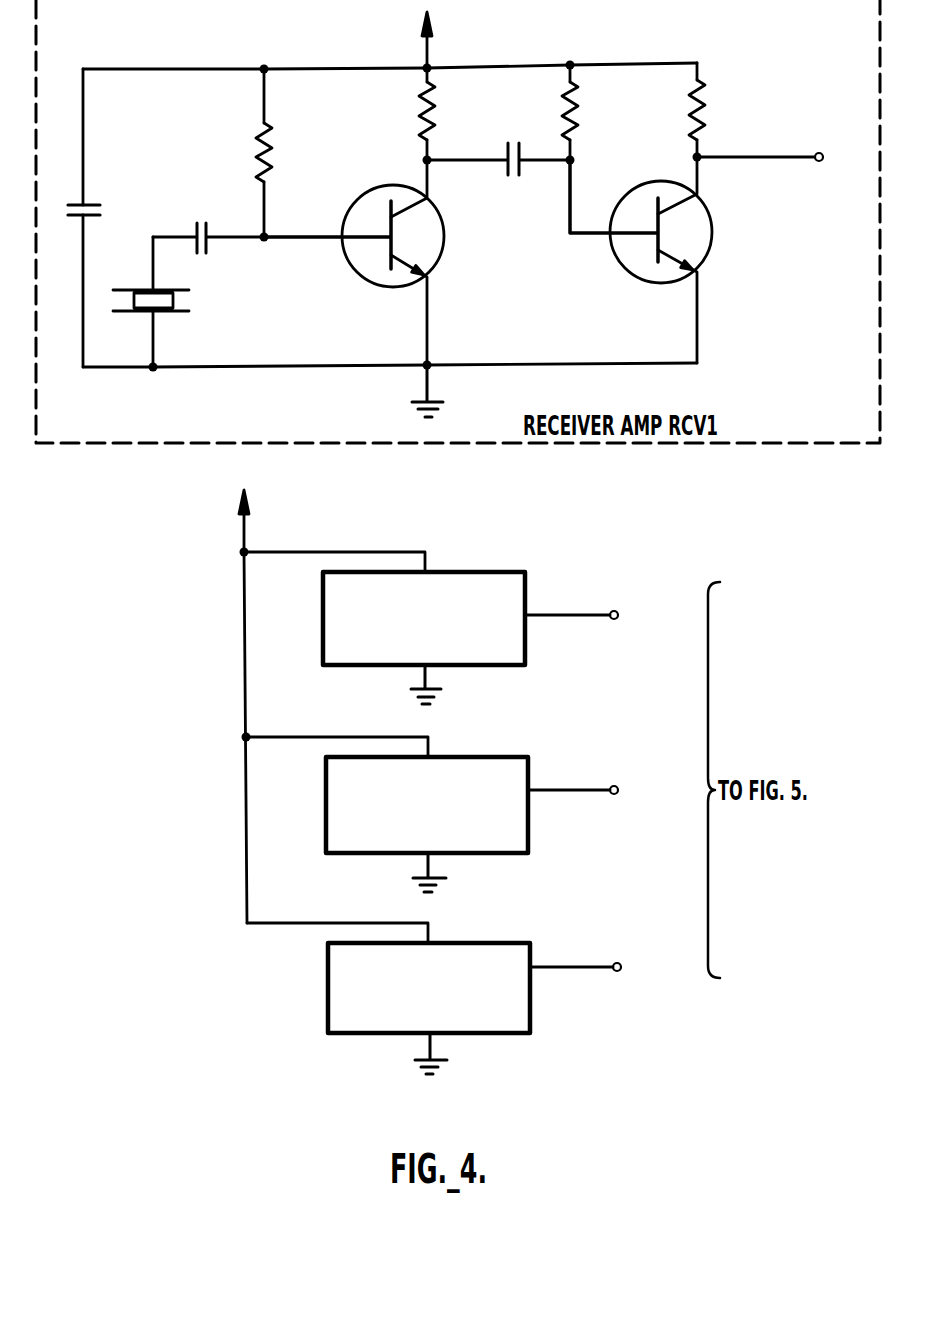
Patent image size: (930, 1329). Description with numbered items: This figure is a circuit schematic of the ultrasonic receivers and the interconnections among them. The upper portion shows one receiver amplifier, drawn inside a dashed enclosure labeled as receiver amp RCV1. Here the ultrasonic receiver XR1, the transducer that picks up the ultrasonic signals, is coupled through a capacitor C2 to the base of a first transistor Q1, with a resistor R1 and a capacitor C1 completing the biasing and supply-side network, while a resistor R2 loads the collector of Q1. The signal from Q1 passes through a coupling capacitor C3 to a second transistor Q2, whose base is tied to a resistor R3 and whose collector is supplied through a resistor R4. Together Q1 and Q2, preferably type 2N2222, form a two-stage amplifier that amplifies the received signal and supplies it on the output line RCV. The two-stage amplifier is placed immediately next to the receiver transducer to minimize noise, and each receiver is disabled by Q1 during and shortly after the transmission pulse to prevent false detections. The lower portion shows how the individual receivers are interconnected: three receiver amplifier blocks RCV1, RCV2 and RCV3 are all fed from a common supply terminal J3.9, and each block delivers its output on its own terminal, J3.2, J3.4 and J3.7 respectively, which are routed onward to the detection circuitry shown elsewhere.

The capacitor C1 is at (94, 211).
The capacitor C2 is at (208, 224).
The capacitor C3 is at (498, 175).
The resistor R1 is at (278, 153).
The resistor R2 is at (441, 114).
The resistor R3 is at (584, 112).
The resistor R4 is at (711, 110).
The ultrasonic receiver XR1 is at (170, 302).
The transistor Q1 is at (367, 262).
The transistor Q2 is at (657, 260).
The line RCV is at (764, 174).
The supply terminal J3.9 is at (279, 706).
The output terminal J3.2 is at (594, 615).
The output terminal J3.4 is at (596, 792).
The output terminal J3.7 is at (598, 968).
The receiver amplifier RCV1 is at (384, 628).
The receiver amplifier RCV2 is at (387, 814).
The receiver amplifier RCV3 is at (388, 998).